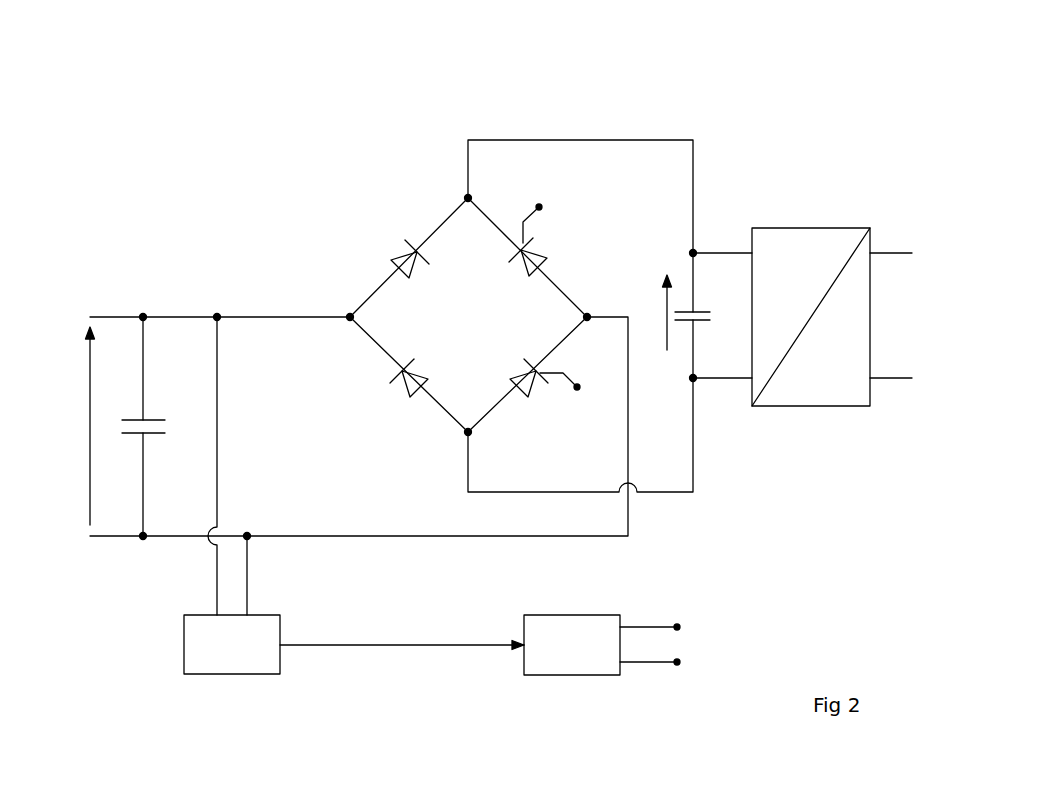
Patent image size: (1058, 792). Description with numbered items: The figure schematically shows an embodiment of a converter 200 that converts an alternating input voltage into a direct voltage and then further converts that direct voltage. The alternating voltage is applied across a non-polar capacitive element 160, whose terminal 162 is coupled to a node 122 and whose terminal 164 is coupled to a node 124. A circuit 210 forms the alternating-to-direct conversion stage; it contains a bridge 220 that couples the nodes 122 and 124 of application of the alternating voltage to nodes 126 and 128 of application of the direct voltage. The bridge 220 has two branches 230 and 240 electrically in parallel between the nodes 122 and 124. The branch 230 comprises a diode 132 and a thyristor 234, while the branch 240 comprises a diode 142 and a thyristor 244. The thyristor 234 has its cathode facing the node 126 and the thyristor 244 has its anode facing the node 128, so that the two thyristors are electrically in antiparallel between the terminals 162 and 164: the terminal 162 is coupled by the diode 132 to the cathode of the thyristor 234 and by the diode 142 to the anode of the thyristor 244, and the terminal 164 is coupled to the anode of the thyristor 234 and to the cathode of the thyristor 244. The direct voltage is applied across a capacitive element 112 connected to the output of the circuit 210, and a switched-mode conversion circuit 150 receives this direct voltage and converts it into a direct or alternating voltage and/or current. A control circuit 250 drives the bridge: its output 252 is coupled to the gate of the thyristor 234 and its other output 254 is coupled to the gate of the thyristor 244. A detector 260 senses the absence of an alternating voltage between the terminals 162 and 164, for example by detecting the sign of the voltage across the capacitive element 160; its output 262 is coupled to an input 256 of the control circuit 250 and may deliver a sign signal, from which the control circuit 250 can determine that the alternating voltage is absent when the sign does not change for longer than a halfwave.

The converter 200 is at (156, 79).
The circuit 210 is at (200, 202).
The bridge 220 is at (315, 137).
The branch 230 is at (430, 219).
The branch 240 is at (430, 421).
The diode 132 is at (395, 250).
The diode 142 is at (407, 390).
The thyristor 234 is at (536, 253).
The thyristor 244 is at (532, 382).
The node 122 is at (347, 315).
The node 124 is at (590, 321).
The node 126 is at (465, 196).
The node 128 is at (466, 436).
The capacitive element 112 is at (683, 310).
The conversion circuit 150 is at (790, 228).
The capacitive element 160 is at (157, 436).
The terminal 162 is at (144, 368).
The terminal 164 is at (144, 502).
The control circuit 250 is at (582, 624).
The output 252 is at (622, 621).
The output 254 is at (620, 667).
The input 256 is at (522, 650).
The detector 260 is at (196, 662).
The output 262 is at (281, 646).